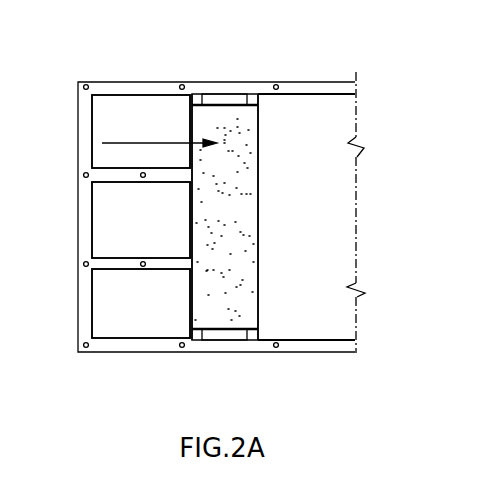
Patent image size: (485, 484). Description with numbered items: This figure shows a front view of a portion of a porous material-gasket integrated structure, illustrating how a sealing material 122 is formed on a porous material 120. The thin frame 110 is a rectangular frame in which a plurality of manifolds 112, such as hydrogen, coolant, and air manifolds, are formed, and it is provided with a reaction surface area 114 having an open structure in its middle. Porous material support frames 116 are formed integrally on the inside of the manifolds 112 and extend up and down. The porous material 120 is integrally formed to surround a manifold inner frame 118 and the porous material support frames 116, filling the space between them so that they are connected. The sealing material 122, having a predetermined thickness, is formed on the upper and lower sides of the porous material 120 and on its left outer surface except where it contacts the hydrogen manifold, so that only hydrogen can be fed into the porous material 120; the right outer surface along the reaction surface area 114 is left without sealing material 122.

The thin frame 110 is at (325, 89).
The manifolds 112 is at (133, 103).
The reaction surface area 114 is at (320, 118).
The porous material support frames 116 is at (254, 93).
The manifold inner frame 118 is at (196, 96).
The porous material 120 is at (250, 228).
The sealing material 122 is at (220, 103).